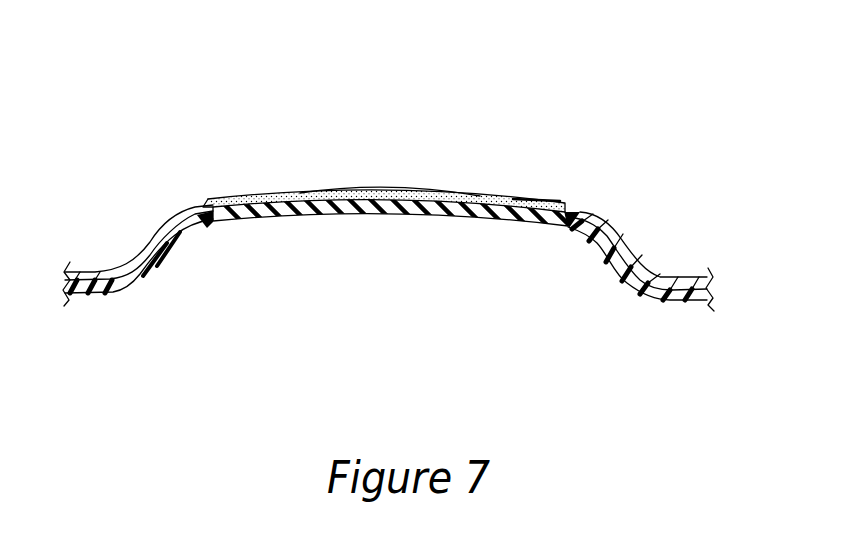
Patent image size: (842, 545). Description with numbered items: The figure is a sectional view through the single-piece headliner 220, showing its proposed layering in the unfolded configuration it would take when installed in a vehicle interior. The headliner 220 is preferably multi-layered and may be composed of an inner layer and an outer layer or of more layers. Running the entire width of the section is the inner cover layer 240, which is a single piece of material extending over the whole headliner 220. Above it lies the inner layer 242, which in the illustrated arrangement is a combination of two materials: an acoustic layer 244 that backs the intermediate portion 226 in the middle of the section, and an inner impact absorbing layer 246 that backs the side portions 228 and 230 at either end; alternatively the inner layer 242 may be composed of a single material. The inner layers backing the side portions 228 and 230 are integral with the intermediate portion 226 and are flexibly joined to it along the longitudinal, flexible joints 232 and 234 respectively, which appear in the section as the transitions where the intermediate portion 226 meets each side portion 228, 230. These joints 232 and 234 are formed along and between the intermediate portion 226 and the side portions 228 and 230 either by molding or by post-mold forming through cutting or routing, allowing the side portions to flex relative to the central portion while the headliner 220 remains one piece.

The single-piece headliner 220 is at (503, 100).
The intermediate portion 226 is at (521, 199).
The side portion 228 is at (643, 255).
The side portion 230 is at (118, 270).
The longitudinal flexible joint 232 is at (571, 223).
The longitudinal flexible joint 234 is at (208, 199).
The inner cover layer 240 is at (97, 297).
The inner layer 242 is at (428, 192).
The acoustic layer 244 is at (323, 197).
The inner impact absorbing layer 246 is at (178, 238).